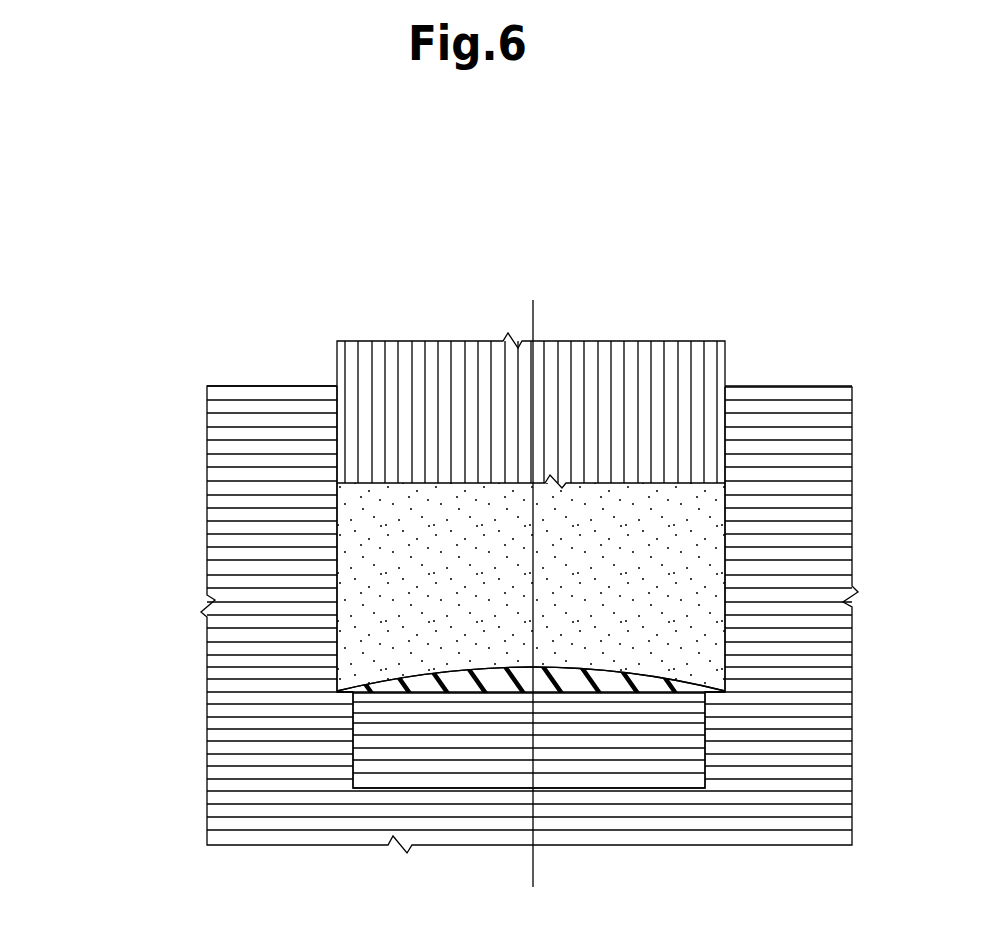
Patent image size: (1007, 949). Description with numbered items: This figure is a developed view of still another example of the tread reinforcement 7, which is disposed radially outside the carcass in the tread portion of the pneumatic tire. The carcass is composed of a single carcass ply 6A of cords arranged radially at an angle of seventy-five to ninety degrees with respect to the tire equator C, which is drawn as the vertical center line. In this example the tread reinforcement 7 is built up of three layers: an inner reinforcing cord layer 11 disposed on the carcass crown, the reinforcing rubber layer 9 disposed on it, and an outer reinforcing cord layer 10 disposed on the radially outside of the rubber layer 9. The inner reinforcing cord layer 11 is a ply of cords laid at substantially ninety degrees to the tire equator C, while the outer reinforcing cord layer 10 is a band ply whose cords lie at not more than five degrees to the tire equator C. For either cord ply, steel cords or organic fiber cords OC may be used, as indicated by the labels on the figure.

The carcass ply 6A is at (235, 394).
The tread reinforcement 7 is at (76, 466).
The outer reinforcing cord layer 10 is at (352, 437).
The reinforcing rubber layer 9 is at (348, 566).
The inner reinforcing cord layer 11 is at (367, 723).
The tire equator C is at (532, 611).
The organic fiber cords OC is at (348, 895).